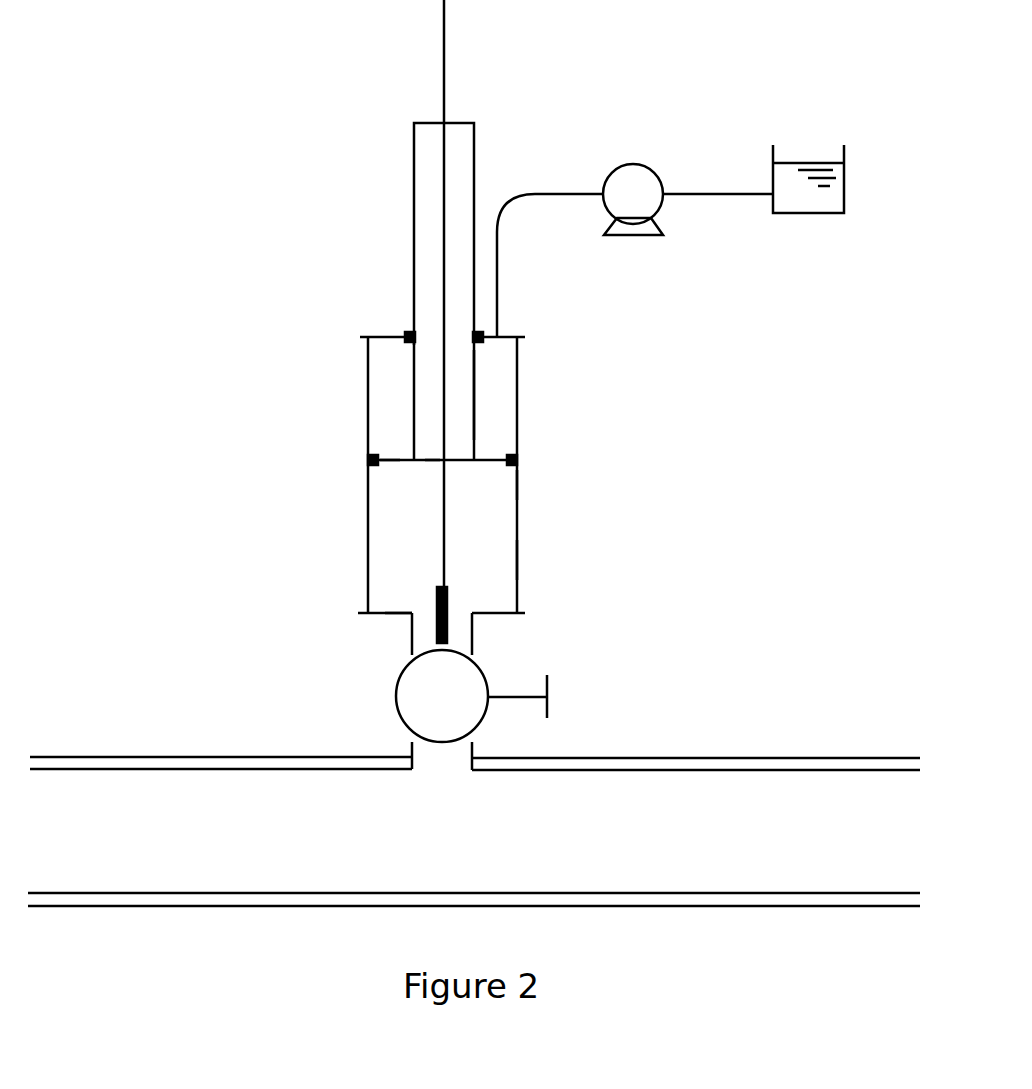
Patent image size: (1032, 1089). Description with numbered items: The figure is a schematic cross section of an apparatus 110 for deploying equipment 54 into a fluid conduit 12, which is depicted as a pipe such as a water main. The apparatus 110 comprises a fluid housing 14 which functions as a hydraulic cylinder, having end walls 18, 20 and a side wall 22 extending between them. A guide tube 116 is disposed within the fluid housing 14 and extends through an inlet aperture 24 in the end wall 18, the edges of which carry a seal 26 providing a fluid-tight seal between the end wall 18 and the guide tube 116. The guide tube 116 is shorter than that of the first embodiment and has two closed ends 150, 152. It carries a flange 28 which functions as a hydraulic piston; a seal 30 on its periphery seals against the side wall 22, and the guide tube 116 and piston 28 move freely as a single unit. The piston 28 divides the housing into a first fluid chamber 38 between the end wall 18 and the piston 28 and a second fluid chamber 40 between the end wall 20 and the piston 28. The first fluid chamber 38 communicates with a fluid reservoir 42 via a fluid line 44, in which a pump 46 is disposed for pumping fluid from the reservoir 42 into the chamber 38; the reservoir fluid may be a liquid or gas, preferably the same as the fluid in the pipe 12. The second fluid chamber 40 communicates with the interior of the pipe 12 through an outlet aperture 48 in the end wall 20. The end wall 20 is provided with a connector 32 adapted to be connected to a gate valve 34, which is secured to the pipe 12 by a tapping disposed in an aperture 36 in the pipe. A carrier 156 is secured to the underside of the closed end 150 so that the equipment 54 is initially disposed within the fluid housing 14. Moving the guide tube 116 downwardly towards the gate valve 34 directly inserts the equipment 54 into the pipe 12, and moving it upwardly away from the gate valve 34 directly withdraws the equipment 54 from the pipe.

The fluid conduit 12 is at (772, 758).
The fluid housing 14 is at (367, 597).
The end wall 18 is at (385, 335).
The end wall 20 is at (395, 613).
The side wall 22 is at (517, 483).
The inlet aperture 24 is at (428, 343).
The seal 26 is at (410, 336).
The flange 28 is at (393, 462).
The seal 30 is at (370, 459).
The connector 32 is at (472, 633).
The gate valve 34 is at (417, 690).
The aperture 36 is at (470, 763).
The first fluid chamber 38 is at (492, 378).
The second fluid chamber 40 is at (497, 560).
The fluid reservoir 42 is at (788, 185).
The fluid line 44 is at (708, 194).
The pump 46 is at (640, 185).
The outlet aperture 48 is at (410, 618).
The equipment 54 is at (447, 607).
The apparatus 110 is at (148, 414).
The guide tube 116 is at (473, 410).
The closed end 150 is at (432, 462).
The closed end 152 is at (468, 123).
The carrier 156 is at (443, 543).